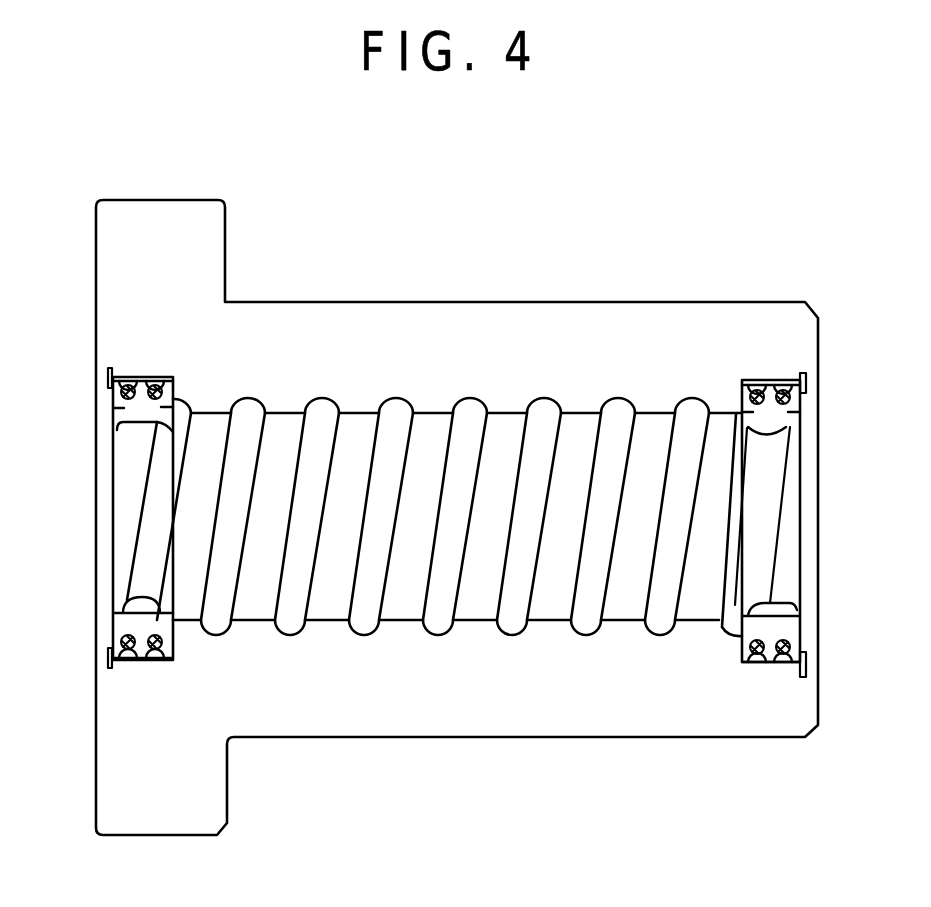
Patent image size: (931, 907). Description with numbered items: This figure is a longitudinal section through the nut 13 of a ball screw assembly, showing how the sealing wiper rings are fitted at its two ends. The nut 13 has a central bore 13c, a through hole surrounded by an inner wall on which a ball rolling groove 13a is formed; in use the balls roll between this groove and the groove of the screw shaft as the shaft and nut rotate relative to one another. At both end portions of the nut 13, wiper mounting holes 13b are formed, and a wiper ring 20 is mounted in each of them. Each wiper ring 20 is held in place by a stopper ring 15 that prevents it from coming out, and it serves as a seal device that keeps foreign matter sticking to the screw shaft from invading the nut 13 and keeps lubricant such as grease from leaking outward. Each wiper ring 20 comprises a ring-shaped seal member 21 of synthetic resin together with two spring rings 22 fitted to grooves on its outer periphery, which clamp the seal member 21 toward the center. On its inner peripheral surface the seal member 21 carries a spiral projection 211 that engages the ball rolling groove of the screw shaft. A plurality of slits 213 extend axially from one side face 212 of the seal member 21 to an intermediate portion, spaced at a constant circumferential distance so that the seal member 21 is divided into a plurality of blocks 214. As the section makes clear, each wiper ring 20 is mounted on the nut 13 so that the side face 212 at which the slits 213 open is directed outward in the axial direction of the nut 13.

The nut 13 is at (510, 330).
The ball rolling groove 13a is at (618, 402).
The wiper mounting hole 13b is at (108, 656).
The central bore 13c is at (400, 405).
The stopper ring 15 is at (98, 368).
The wiper ring 20 is at (124, 410).
The seal member 21 is at (180, 400).
The spring ring 22 is at (133, 378).
The spiral projection 211 is at (117, 560).
The side face 212 is at (112, 507).
The slit 213 is at (115, 480).
The block 214 is at (128, 444).